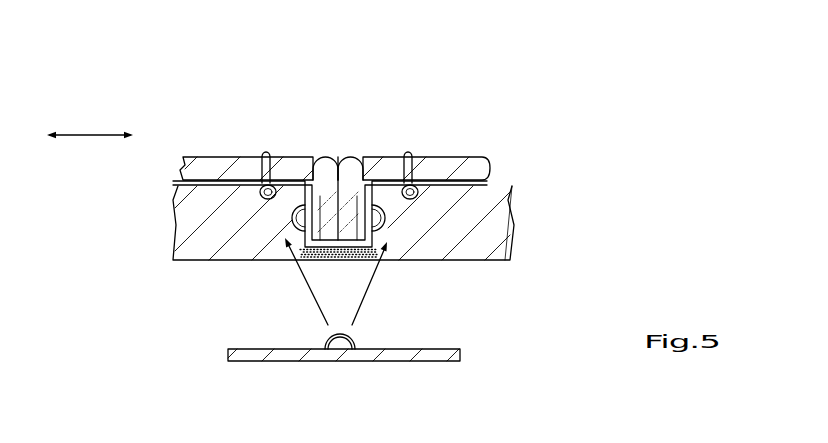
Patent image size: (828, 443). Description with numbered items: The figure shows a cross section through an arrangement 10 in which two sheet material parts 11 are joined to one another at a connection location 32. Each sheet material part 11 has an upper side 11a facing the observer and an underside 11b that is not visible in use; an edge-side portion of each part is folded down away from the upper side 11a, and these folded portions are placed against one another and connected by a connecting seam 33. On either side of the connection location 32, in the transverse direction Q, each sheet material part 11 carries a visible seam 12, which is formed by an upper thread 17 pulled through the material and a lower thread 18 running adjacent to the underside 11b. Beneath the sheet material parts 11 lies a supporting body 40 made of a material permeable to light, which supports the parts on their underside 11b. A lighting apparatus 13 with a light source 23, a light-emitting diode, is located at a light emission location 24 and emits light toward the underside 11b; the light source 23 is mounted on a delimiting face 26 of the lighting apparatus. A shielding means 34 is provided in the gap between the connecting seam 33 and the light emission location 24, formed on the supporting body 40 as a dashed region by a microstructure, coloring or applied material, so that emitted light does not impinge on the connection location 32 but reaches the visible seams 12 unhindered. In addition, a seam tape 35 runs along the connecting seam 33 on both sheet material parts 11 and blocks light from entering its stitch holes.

The arrangement 10 is at (588, 98).
The transverse direction Q is at (68, 130).
The sheet material part 11 is at (490, 172).
The upper side 11a is at (481, 143).
The underside 11b is at (470, 190).
The visible seam 12 is at (272, 128).
The lighting apparatus 13 is at (245, 318).
The upper thread 17 is at (264, 152).
The lower thread 18 is at (263, 195).
The light source 23 is at (343, 352).
The light emission location 24 is at (310, 341).
The delimiting face 26 is at (443, 342).
The connection location 32 is at (334, 140).
The connecting seam 33 is at (380, 230).
The shielding means 34 is at (323, 268).
The seam tape 35 is at (311, 156).
The supporting body 40 is at (510, 250).